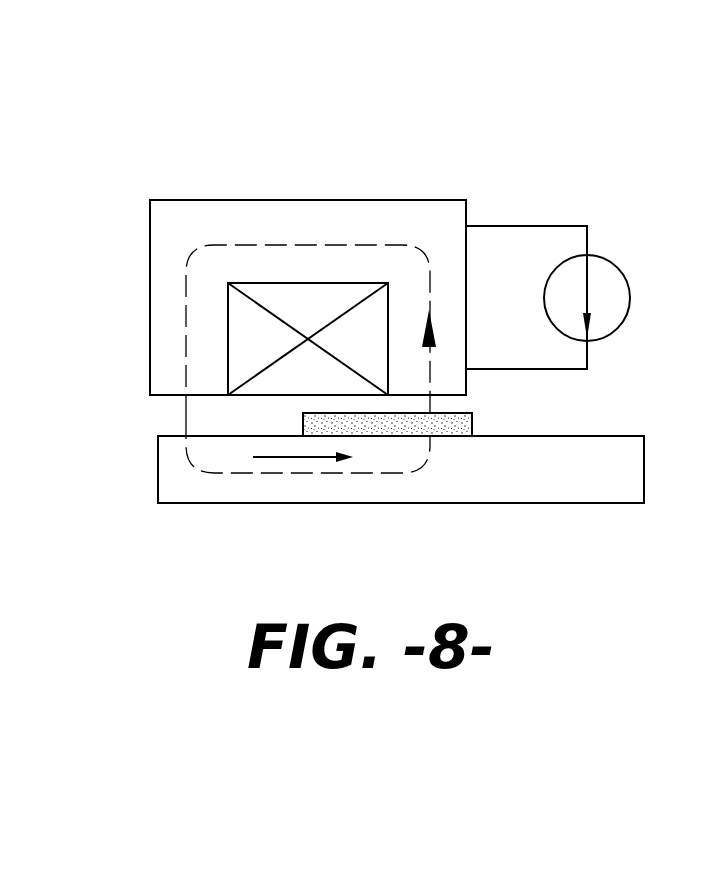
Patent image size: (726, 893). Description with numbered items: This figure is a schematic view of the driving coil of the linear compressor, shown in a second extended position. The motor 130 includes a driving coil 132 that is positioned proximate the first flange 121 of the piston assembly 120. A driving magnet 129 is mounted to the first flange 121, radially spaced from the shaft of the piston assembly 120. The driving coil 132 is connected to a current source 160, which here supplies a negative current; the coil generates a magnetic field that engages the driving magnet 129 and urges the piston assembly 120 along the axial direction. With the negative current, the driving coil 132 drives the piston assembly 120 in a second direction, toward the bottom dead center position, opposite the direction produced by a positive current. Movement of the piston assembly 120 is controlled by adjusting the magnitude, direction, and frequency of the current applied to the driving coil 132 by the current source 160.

The motor 130 is at (170, 160).
The driving coil 132 is at (306, 304).
The current source 160 is at (625, 279).
The driving magnet 129 is at (473, 425).
The piston assembly 120 is at (275, 522).
The first flange 121 is at (608, 491).